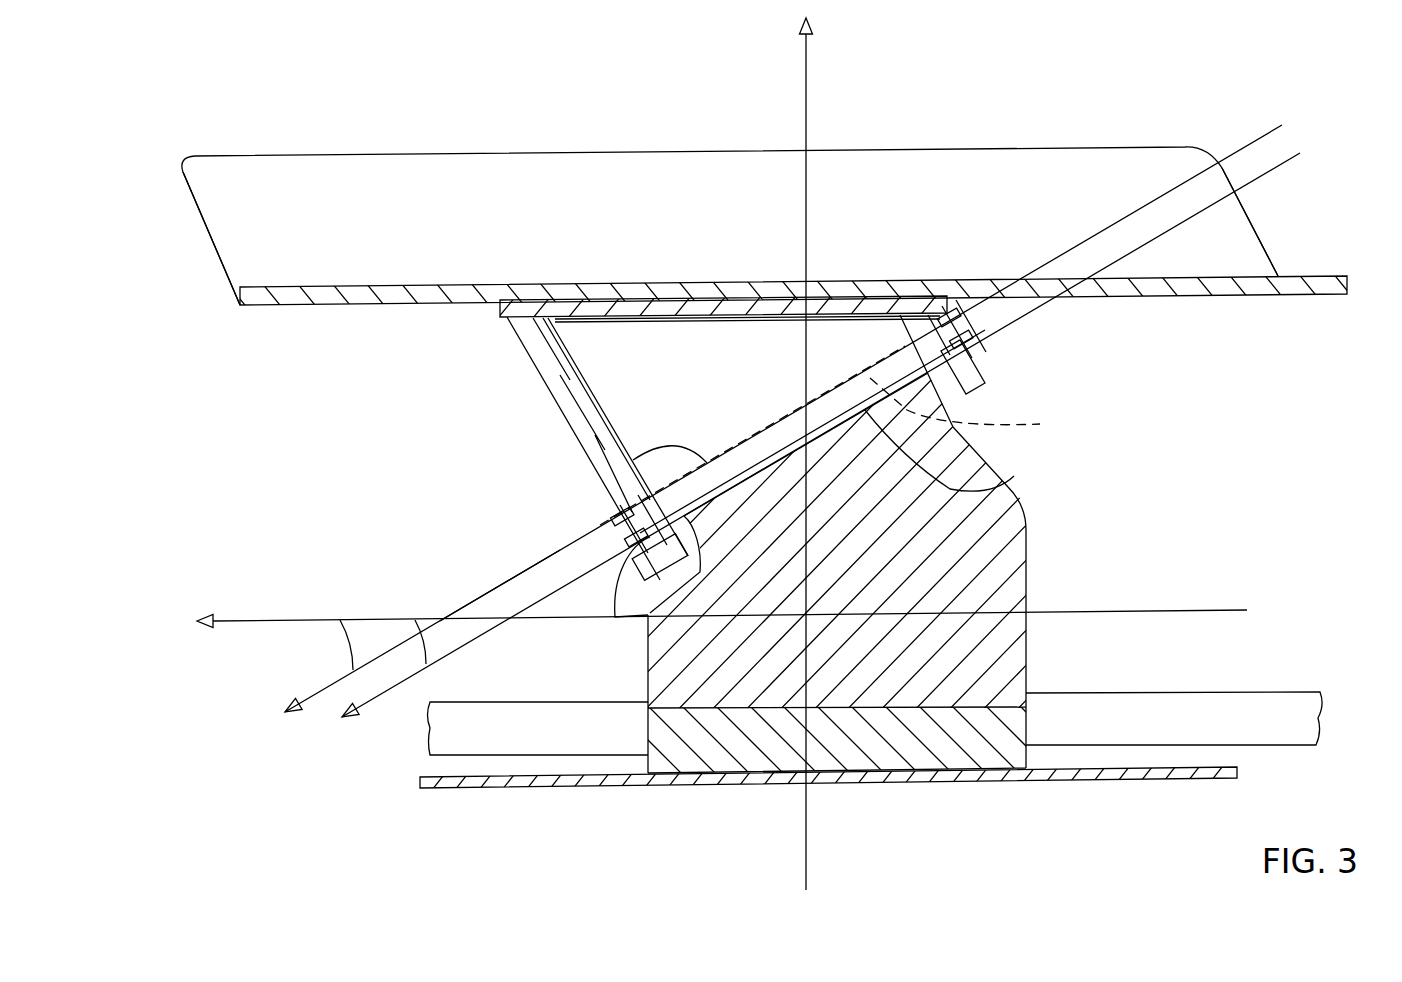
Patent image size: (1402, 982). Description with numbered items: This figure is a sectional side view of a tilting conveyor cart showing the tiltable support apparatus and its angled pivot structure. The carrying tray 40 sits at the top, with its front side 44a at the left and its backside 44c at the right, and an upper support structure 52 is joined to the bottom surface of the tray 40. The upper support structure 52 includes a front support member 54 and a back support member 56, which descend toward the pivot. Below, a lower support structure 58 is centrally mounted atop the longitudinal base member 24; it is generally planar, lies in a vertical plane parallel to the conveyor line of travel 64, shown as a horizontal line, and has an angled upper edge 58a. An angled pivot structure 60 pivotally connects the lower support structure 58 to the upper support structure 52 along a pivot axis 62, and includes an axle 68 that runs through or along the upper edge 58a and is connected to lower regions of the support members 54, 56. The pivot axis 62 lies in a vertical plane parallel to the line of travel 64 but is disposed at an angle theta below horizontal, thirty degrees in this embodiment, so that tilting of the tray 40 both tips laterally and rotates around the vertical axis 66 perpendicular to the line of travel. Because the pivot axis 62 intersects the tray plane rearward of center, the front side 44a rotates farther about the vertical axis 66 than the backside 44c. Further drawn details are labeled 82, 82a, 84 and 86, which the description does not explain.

The longitudinal base member 24 is at (1142, 780).
The carrying tray 40 is at (288, 184).
The front side of the tray 44a is at (215, 240).
The backside of the tray 44c is at (1265, 240).
The upper support structure 52 is at (496, 323).
The front support member 54 is at (538, 361).
The back support member 56 is at (985, 385).
The lower support structure 58 is at (1027, 580).
The angled upper edge 58a is at (645, 462).
The angled pivot structure 60 is at (621, 599).
The pivot axis 62 is at (553, 577).
The conveyor line of travel 64 is at (248, 621).
The vertical axis 66 is at (812, 85).
The axle 68 is at (1003, 485).
The shim plate 82 is at (655, 332).
The strut flexure portion 82a is at (612, 389).
The flexure strip 84 is at (840, 435).
The rod lower end 86 is at (480, 592).